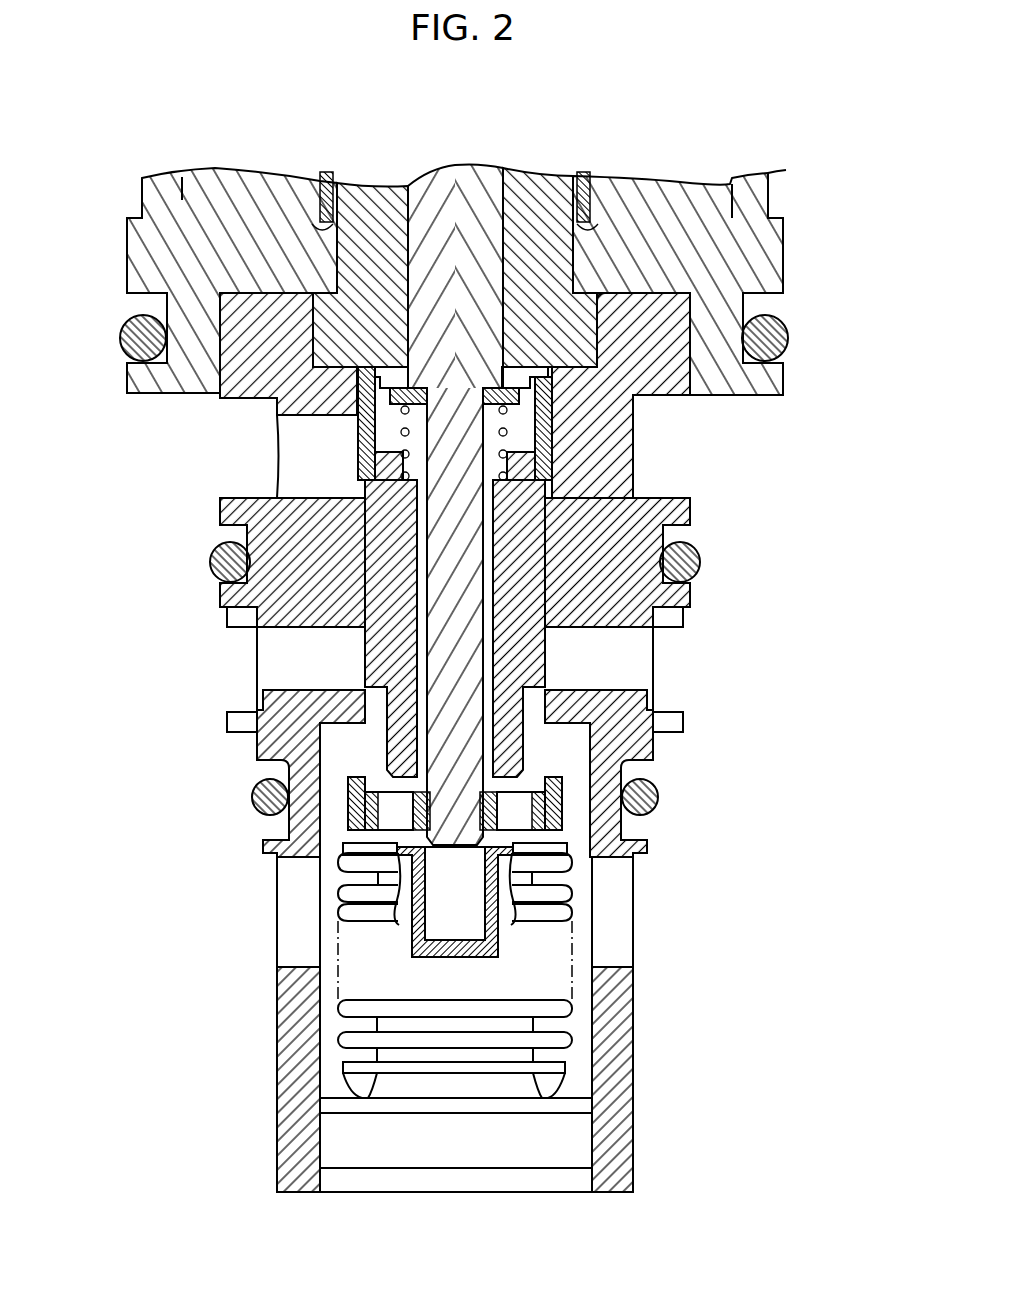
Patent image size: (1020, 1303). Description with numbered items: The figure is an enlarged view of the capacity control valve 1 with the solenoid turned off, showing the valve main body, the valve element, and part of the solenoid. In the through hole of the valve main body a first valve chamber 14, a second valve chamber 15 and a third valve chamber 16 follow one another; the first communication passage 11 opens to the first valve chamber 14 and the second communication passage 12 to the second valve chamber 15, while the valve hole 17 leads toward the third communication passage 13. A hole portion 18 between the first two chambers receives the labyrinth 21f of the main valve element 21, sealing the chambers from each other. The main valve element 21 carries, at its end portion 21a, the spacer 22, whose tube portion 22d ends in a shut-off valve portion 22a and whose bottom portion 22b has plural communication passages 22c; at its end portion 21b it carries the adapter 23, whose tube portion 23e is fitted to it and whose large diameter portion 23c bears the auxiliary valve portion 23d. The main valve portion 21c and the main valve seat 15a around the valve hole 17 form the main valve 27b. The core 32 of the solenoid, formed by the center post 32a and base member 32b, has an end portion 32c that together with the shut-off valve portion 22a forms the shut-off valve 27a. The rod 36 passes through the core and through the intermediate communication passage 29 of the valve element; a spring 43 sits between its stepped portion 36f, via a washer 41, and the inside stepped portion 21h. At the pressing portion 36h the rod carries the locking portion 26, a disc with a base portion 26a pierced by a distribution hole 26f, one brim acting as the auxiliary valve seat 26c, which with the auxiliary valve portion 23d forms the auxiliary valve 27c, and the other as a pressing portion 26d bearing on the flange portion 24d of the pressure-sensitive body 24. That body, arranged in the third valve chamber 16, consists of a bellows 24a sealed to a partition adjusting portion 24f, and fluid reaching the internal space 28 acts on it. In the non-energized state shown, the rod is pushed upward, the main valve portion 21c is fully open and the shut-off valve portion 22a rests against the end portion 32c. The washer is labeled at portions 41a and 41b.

The capacity control valve 1 is at (808, 181).
The rod 36 is at (458, 200).
The stepped portion 36f is at (395, 423).
The pressing portion 36h is at (437, 828).
The core 32 is at (433, 281).
The center post 32a is at (352, 256).
The base member 32b is at (163, 268).
The end portion 32c is at (760, 338).
The shut-off valve 27a is at (850, 336).
The main valve 27b is at (752, 628).
The auxiliary valve 27c is at (735, 745).
The spacer 22 is at (610, 445).
The shut-off valve portion 22a is at (600, 380).
The bottom portion 22b is at (528, 370).
The communication passages 22c is at (390, 383).
The tube portion 22d is at (548, 455).
The washer 41 is at (540, 393).
The bearing upper portion 41a is at (493, 388).
The bearing lower portion 41b is at (490, 404).
The spring 43 is at (533, 430).
The first communication passage 11 is at (300, 437).
The first valve chamber 14 is at (365, 482).
The hole portion 18 is at (368, 535).
The main valve element 21 is at (590, 520).
The end portion 21a is at (555, 512).
The end portion 21b is at (605, 620).
The main valve portion 21c is at (557, 653).
The labyrinth 21f is at (215, 560).
The inside stepped portion 21h is at (590, 572).
The intermediate communication passage 29 is at (696, 572).
The second communication passage 12 is at (285, 640).
The second valve chamber 15 is at (345, 675).
The main valve seat 15a is at (557, 683).
The valve hole 17 is at (565, 705).
The adapter 23 is at (165, 665).
The large diameter portion 23c is at (227, 722).
The auxiliary valve portion 23d is at (350, 778).
The tube portion 23e is at (395, 728).
The locking portion 26 is at (142, 785).
The base portion 26a is at (358, 815).
The auxiliary valve seat 26c is at (254, 798).
The pressing portion 26d is at (372, 822).
The distribution hole 26f is at (385, 808).
The internal space 28 is at (565, 849).
The third communication passage 13 is at (293, 943).
The third valve chamber 16 is at (327, 1013).
The pressure-sensitive body 24 is at (757, 905).
The bellows 24a is at (575, 943).
The flange portion 24d is at (575, 870).
The partition adjusting portion 24f is at (553, 1125).